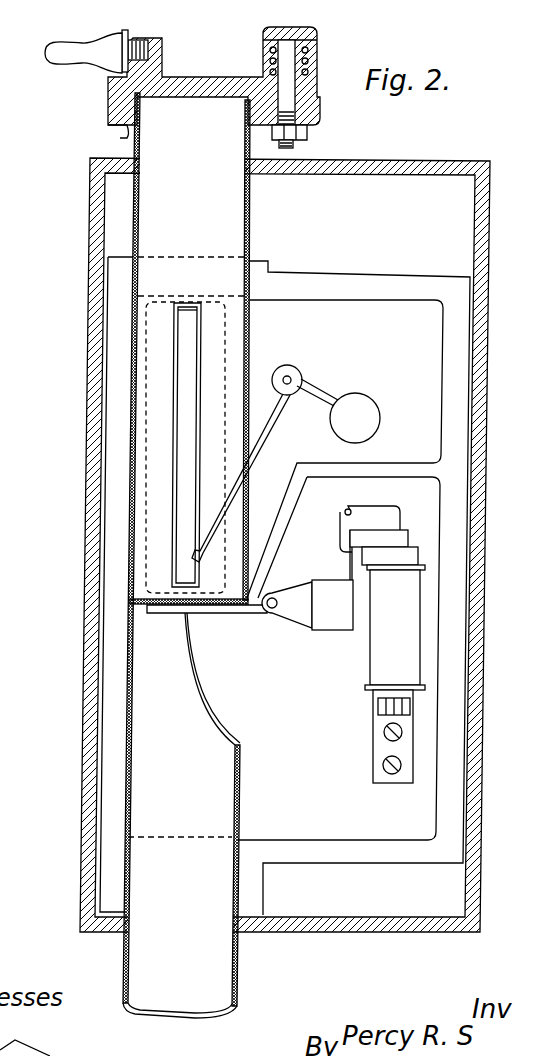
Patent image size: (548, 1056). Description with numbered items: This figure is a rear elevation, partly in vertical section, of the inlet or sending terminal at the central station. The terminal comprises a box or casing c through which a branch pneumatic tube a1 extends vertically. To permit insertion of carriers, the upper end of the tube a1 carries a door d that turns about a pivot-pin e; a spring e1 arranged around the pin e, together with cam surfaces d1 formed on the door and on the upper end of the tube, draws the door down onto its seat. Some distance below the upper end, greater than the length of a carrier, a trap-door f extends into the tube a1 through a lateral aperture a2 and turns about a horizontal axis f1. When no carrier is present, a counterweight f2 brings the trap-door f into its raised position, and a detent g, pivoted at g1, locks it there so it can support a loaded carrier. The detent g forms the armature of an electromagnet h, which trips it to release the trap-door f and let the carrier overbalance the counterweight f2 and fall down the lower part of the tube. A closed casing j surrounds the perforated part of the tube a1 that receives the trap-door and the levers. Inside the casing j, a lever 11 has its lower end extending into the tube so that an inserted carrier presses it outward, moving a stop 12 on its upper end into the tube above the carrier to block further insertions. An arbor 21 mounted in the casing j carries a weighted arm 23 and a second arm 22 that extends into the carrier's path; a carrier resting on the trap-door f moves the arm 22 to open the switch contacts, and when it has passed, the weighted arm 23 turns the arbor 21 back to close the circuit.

The box or casing c is at (93, 507).
The door d is at (198, 87).
The cam surfaces d1 is at (108, 127).
The pivot-pin e is at (296, 80).
The spring e1 is at (309, 58).
The branch pneumatic tube a1 is at (186, 555).
The lateral aperture a2 is at (215, 716).
The closed casing j is at (450, 357).
The lever 11 is at (190, 378).
The stop 12 is at (187, 313).
The arbor 21 is at (292, 378).
The second arm 22 is at (245, 477).
The weighted arm 23 is at (372, 430).
The trap-door f is at (135, 607).
The horizontal axis f1 is at (272, 609).
The counterweight f2 is at (307, 605).
The detent g is at (350, 565).
The detent pivot g1 is at (345, 511).
The electromagnet h is at (377, 655).